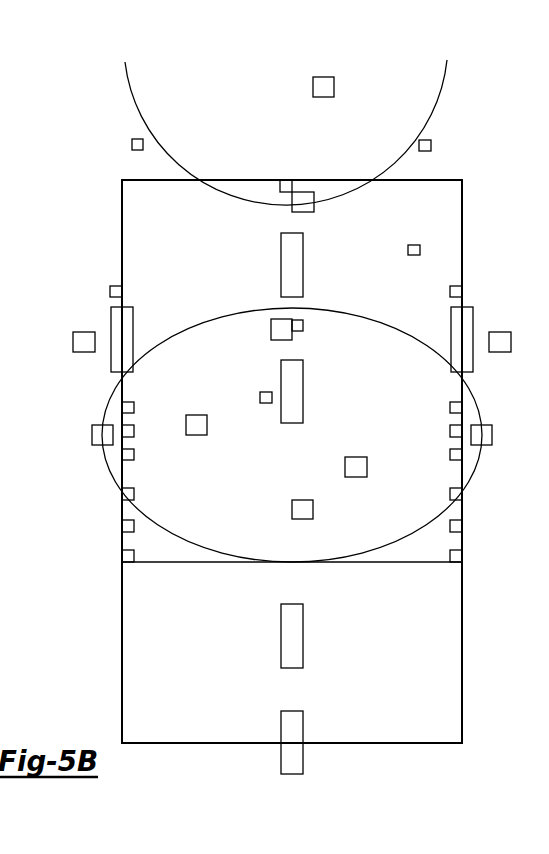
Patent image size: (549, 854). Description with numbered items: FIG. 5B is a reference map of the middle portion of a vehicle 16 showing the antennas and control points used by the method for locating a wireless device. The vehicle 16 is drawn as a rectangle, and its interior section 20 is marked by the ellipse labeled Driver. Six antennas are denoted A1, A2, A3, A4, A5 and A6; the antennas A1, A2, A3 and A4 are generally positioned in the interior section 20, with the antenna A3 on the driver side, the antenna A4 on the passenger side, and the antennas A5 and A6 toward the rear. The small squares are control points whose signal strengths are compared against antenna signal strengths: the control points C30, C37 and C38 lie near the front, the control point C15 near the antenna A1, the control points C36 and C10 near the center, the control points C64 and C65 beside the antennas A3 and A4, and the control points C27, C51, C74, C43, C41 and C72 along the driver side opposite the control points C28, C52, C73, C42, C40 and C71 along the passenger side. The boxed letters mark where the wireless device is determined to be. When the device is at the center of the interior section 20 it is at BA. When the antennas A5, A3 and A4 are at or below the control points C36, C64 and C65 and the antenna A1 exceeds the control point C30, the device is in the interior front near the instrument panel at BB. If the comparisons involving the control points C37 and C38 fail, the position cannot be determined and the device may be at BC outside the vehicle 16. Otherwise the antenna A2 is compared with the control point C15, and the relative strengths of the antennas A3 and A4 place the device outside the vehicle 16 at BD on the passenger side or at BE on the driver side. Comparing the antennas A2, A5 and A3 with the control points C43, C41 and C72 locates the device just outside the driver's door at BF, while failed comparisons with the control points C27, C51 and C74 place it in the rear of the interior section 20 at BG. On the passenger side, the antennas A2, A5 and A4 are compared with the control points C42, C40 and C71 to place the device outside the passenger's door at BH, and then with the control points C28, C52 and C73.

The vehicle 16 is at (97, 58).
The interior section 20 is at (365, 382).
The antenna A1 is at (292, 265).
The antenna A2 is at (292, 391).
The antenna A3 is at (122, 339).
The antenna A4 is at (462, 339).
The antenna A5 is at (292, 636).
The antenna A6 is at (292, 742).
The interior center position BA is at (281, 329).
The interior front position BB is at (303, 202).
The undetermined exterior position BC is at (323, 87).
The exterior passenger-side position BD is at (500, 342).
The exterior driver-side position BE is at (84, 342).
The driver door exterior position BF is at (102, 435).
The interior rear position BG is at (276, 467).
The passenger door exterior position BH is at (481, 435).
The control point C10 is at (264, 387).
The control point C15 is at (414, 239).
The control point C27 is at (141, 409).
The control point C28 is at (443, 409).
The control point C30 is at (283, 178).
The control point C36 is at (314, 326).
The control point C37 is at (123, 145).
The control point C38 is at (438, 146).
The control point C40 is at (443, 531).
The control point C41 is at (141, 531).
The control point C42 is at (443, 495).
The control point C43 is at (141, 495).
The control point C51 is at (141, 433).
The control point C52 is at (443, 433).
The control point C64 is at (130, 293).
The control point C65 is at (443, 293).
The control point C71 is at (443, 554).
The control point C72 is at (141, 554).
The control point C73 is at (443, 457).
The control point C74 is at (141, 457).